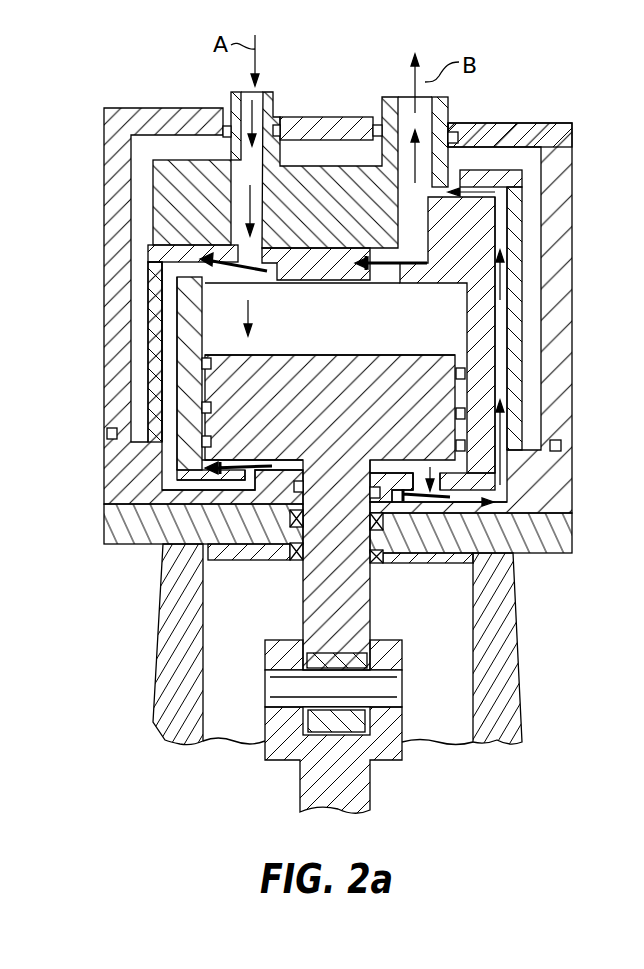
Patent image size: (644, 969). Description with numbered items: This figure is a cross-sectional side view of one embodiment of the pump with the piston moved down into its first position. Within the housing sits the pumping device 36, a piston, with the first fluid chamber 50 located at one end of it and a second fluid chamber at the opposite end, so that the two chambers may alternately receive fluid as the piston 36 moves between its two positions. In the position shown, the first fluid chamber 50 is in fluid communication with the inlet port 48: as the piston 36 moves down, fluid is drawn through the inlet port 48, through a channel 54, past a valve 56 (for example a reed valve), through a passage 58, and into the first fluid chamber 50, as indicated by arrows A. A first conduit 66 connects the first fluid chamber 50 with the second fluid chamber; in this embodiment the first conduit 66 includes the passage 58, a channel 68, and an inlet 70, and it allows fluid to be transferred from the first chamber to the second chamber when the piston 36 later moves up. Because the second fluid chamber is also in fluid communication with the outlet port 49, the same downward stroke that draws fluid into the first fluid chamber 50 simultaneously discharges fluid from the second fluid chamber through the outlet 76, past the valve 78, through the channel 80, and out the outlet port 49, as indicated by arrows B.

The pumping device 36 is at (382, 392).
The inlet port 48 is at (276, 106).
The outlet port 49 is at (380, 106).
The first fluid chamber 50 is at (340, 332).
The channel 54 is at (247, 175).
The valve 56 is at (200, 304).
The passage 58 is at (237, 279).
The first conduit 66 is at (170, 358).
The channel 68 is at (170, 382).
The inlet 70 is at (239, 470).
The outlet 76 is at (437, 453).
The valve 78 is at (430, 475).
The channel 80 is at (500, 357).